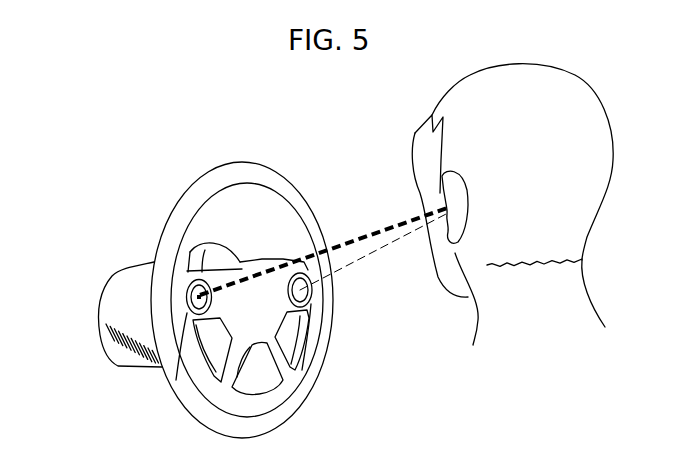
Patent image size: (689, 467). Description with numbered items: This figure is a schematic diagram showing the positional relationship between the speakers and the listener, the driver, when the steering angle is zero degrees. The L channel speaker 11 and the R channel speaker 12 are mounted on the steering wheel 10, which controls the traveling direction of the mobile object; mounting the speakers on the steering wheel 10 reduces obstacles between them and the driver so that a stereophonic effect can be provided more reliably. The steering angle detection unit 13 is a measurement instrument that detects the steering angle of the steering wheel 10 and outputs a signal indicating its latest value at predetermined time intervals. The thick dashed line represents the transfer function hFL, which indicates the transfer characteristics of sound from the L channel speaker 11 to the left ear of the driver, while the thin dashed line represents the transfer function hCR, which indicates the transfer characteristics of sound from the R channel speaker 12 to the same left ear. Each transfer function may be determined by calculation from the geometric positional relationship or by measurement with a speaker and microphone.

The steering wheel 10 is at (180, 197).
The L channel speaker 11 is at (190, 314).
The R channel speaker 12 is at (312, 303).
The steering angle detection unit 13 is at (122, 275).
The transfer function hFL is at (373, 230).
The transfer function hCR is at (352, 272).